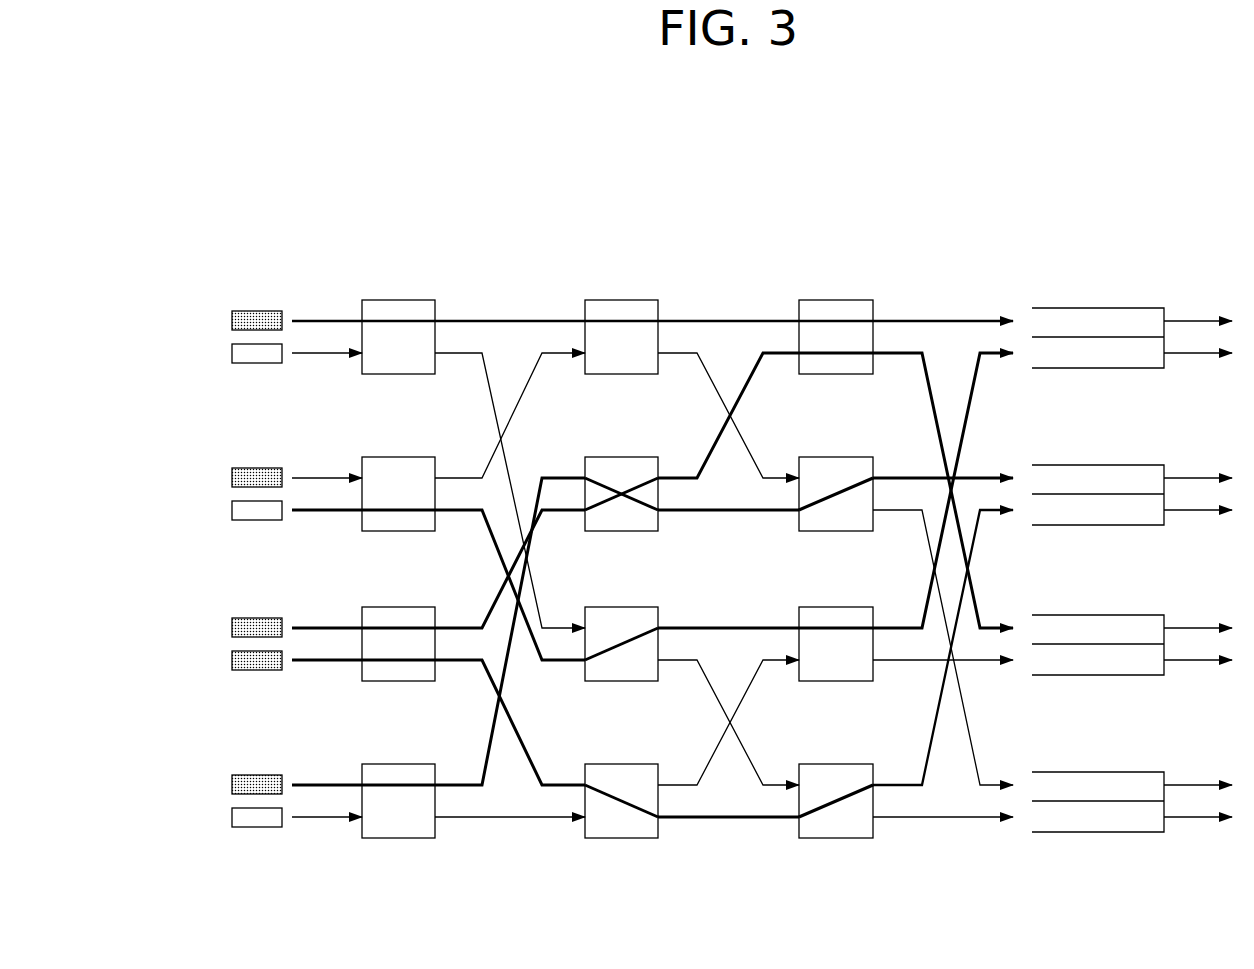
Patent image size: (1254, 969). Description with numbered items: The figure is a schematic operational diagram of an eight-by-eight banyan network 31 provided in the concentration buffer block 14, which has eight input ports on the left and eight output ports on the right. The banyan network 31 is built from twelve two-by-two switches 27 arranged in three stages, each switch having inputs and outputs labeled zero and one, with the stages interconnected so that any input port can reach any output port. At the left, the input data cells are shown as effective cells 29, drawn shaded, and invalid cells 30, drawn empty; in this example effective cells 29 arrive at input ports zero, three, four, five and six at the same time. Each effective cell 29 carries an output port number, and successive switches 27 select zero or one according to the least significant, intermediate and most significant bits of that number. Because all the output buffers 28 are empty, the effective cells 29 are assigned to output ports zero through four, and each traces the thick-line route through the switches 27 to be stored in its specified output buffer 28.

The concentration buffer block 14 is at (1146, 147).
The 2×2 switch 27 is at (403, 308).
The output buffer 28 is at (1088, 353).
The effective cell 29 is at (240, 310).
The invalid cell 30 is at (233, 353).
The n×n banyan network 31 is at (1020, 197).